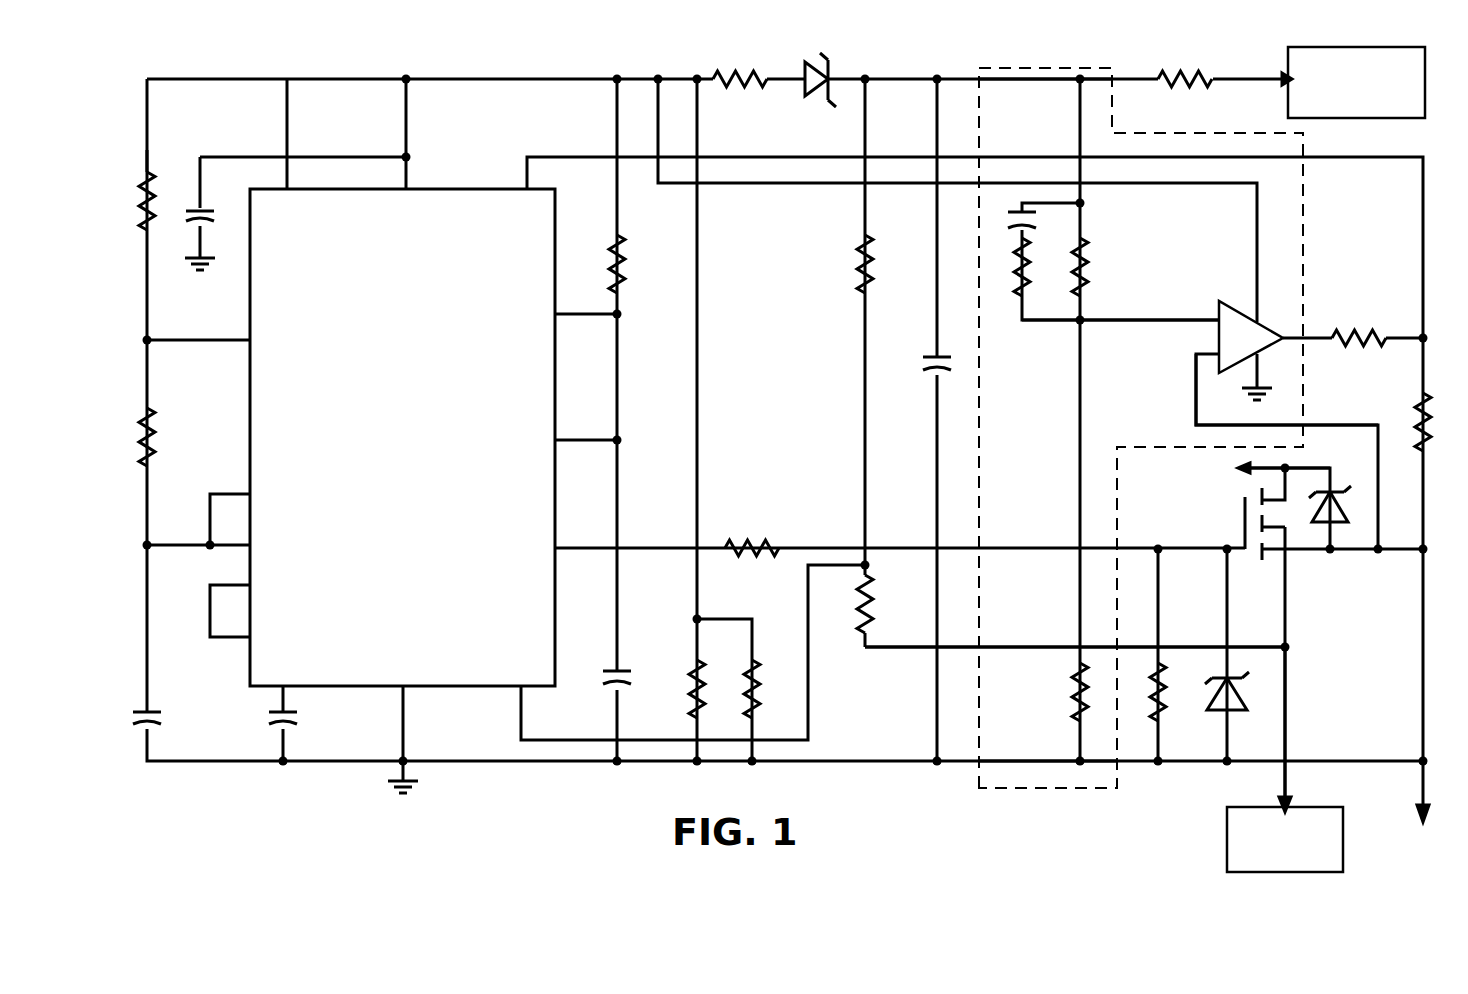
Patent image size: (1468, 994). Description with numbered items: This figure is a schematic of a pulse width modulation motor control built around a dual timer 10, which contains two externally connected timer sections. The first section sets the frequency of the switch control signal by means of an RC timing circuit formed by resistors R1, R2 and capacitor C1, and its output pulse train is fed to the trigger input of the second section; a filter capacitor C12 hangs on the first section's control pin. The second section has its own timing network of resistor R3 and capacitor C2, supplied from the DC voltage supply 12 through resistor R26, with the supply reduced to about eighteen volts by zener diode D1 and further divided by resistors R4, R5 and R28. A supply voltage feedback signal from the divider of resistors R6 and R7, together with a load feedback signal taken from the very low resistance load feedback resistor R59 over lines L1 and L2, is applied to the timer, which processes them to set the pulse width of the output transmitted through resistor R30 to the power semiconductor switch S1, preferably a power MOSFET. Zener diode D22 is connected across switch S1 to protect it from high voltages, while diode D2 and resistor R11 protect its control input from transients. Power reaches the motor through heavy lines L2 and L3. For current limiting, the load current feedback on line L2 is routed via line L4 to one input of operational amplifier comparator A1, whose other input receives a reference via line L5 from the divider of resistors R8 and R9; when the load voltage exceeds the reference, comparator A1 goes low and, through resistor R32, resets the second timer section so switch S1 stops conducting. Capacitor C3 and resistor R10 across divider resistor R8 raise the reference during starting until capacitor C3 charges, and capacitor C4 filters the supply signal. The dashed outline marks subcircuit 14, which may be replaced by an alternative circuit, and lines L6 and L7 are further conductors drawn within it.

The 556 timer 10 is at (405, 474).
The DC voltage supply 12 is at (1288, 45).
The subcircuit 14 is at (986, 68).
The resistor R1 is at (137, 206).
The resistor R2 is at (135, 443).
The resistor R3 is at (628, 252).
The resistor R4 is at (738, 73).
The resistor R5 is at (685, 690).
The resistor R6 is at (858, 278).
The resistor R7 is at (855, 610).
The divider resistor R8 is at (1093, 268).
The resistor R9 is at (1070, 698).
The resistor R10 is at (1015, 277).
The resistor R11 is at (1163, 687).
The resistor R26 is at (1182, 72).
The resistor R28 is at (760, 683).
The resistor R30 is at (750, 540).
The resistor R32 is at (1350, 330).
The load feedback resistor R59 is at (1227, 837).
The capacitor C1 is at (134, 713).
The capacitor C2 is at (606, 675).
The capacitor C3 is at (1034, 225).
The filter capacitor C4 is at (946, 372).
The filter capacitor C12 is at (270, 717).
The zener diode D1 is at (806, 62).
The diode D2 is at (1245, 700).
The zener diode D22 is at (1338, 546).
The operational amplifier comparator A1 is at (1262, 320).
The power semiconductor switch S1 is at (1244, 517).
The line L1 is at (1028, 645).
The line L2 is at (1287, 712).
The line L3 is at (1305, 467).
The line L4 is at (1195, 388).
The line L5 is at (1157, 318).
The line L6 is at (1036, 68).
The line L7 is at (1017, 763).